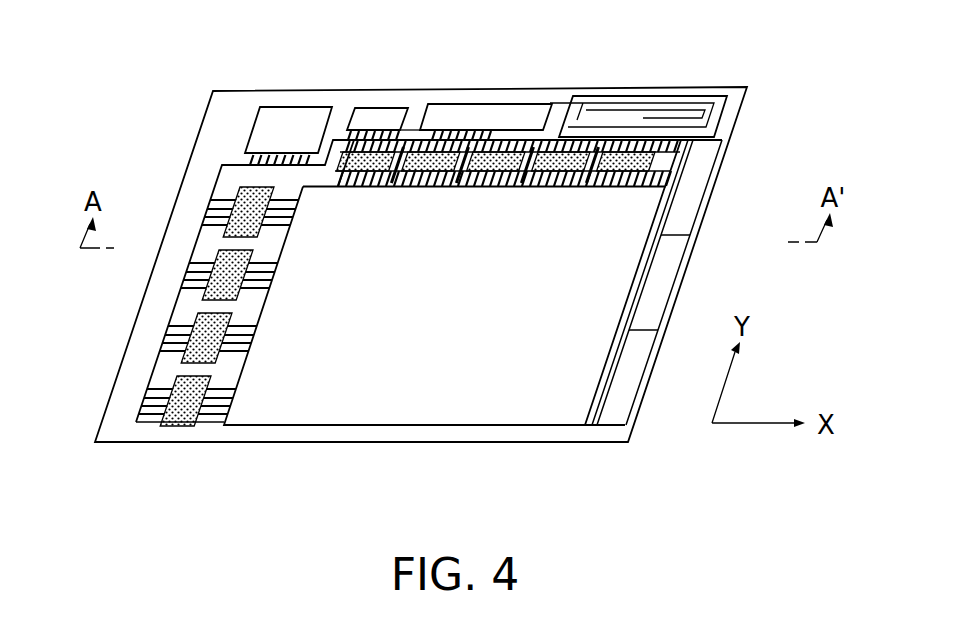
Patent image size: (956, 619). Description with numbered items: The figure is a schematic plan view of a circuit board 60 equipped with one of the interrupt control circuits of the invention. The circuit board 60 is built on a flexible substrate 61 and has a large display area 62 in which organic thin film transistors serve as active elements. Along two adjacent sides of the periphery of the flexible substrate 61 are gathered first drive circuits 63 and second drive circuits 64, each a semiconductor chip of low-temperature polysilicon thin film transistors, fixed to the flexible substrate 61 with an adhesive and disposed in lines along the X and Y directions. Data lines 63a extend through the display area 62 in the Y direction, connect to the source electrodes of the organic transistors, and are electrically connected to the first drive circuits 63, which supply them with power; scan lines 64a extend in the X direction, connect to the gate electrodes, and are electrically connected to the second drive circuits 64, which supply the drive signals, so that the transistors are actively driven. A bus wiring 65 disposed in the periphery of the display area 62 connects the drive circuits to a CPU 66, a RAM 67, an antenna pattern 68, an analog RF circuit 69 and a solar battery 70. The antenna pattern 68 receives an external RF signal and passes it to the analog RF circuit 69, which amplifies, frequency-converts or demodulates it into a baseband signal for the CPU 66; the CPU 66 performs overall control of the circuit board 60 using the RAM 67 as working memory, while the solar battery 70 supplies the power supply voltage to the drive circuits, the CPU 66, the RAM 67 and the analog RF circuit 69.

The circuit board 60 is at (790, 76).
The flexible substrate 61 is at (450, 443).
The display area 62 is at (568, 392).
The first drive circuits 63 is at (553, 114).
The data lines 63a is at (653, 175).
The second drive circuits 64 is at (184, 346).
The scan lines 64a is at (207, 428).
The bus wiring 65 is at (216, 184).
The CPU 66 is at (295, 122).
The RAM 67 is at (381, 100).
The antenna pattern 68 is at (607, 97).
The analog RF circuit 69 is at (488, 98).
The solar battery 70 is at (674, 262).